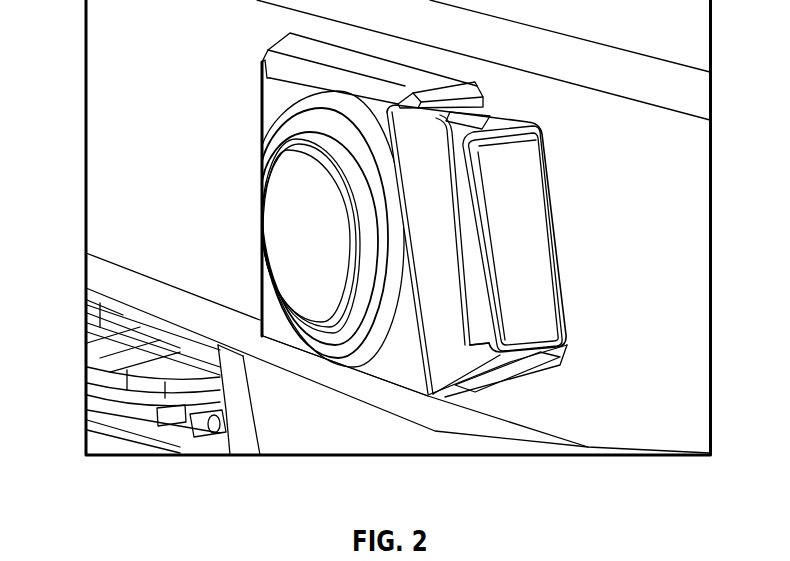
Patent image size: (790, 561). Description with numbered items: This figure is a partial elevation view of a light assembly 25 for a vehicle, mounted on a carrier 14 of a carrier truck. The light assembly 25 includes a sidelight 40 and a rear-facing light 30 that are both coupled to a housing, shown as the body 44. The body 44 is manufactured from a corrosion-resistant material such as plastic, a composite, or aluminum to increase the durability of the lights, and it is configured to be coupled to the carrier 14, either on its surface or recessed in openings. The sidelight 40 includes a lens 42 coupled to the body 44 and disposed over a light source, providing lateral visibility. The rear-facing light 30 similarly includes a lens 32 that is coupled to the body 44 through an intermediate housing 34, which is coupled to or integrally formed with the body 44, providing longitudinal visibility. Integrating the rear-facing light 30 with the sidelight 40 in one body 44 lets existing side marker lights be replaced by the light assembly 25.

The carrier 14 is at (142, 135).
The light assembly 25 is at (222, 36).
The rear-facing light 30 is at (543, 122).
The lens 32 is at (536, 252).
The intermediate housing 34 is at (507, 124).
The sidelight 40 is at (386, 372).
The lens 42 is at (281, 244).
The body 44 is at (262, 103).